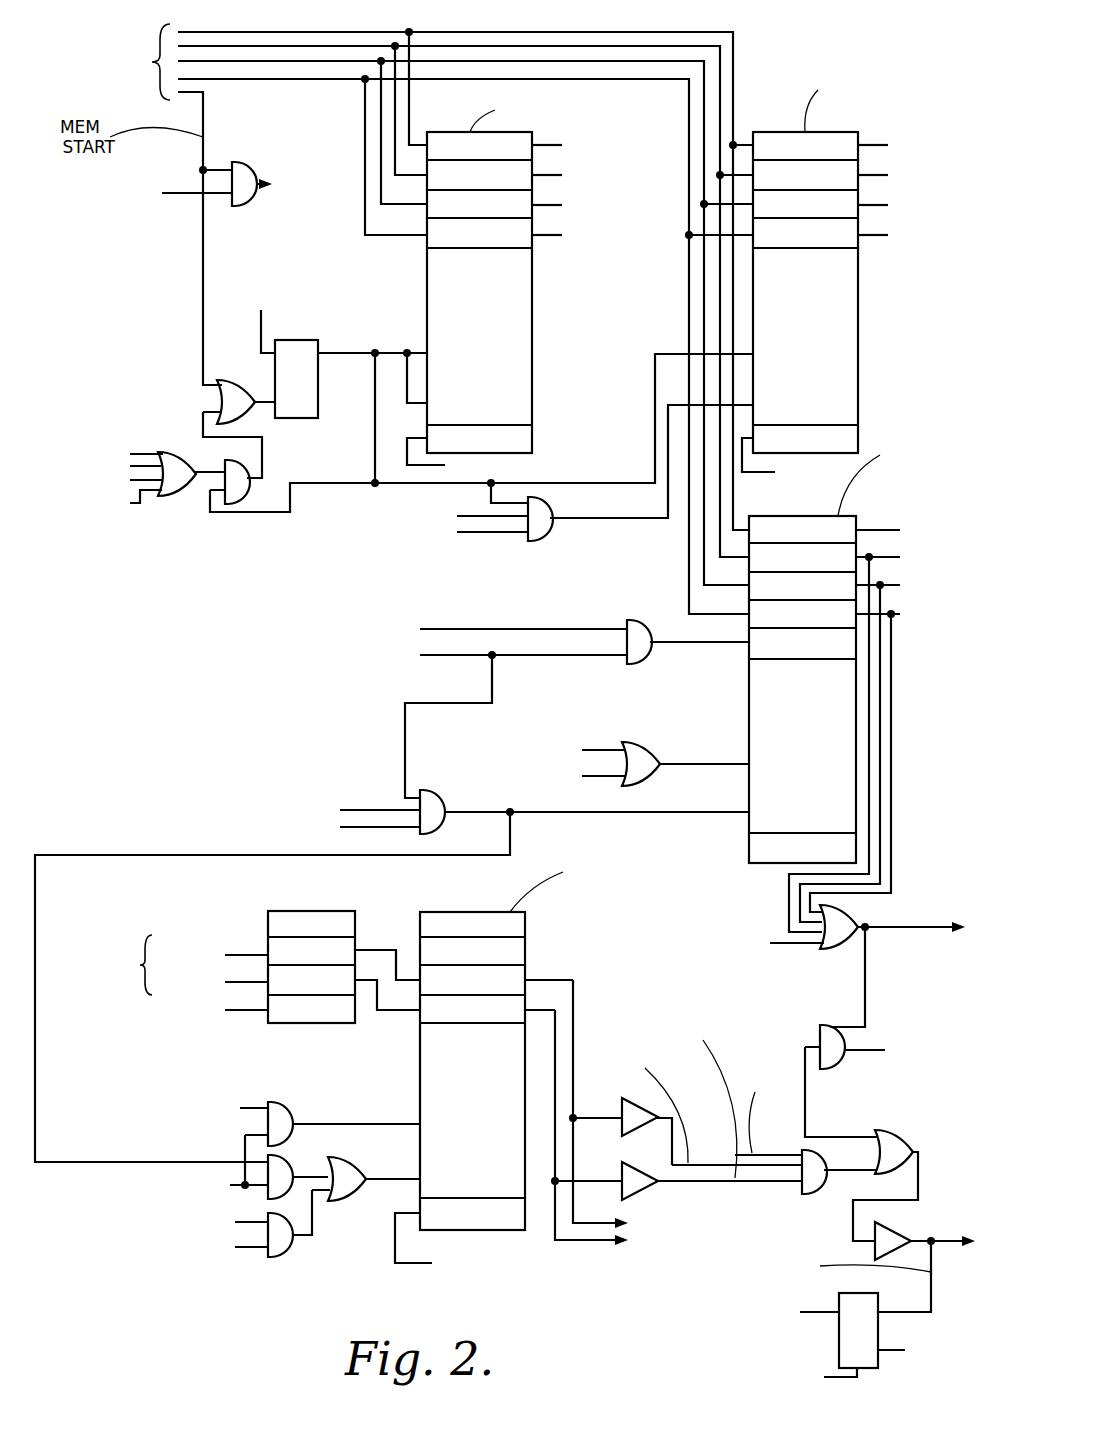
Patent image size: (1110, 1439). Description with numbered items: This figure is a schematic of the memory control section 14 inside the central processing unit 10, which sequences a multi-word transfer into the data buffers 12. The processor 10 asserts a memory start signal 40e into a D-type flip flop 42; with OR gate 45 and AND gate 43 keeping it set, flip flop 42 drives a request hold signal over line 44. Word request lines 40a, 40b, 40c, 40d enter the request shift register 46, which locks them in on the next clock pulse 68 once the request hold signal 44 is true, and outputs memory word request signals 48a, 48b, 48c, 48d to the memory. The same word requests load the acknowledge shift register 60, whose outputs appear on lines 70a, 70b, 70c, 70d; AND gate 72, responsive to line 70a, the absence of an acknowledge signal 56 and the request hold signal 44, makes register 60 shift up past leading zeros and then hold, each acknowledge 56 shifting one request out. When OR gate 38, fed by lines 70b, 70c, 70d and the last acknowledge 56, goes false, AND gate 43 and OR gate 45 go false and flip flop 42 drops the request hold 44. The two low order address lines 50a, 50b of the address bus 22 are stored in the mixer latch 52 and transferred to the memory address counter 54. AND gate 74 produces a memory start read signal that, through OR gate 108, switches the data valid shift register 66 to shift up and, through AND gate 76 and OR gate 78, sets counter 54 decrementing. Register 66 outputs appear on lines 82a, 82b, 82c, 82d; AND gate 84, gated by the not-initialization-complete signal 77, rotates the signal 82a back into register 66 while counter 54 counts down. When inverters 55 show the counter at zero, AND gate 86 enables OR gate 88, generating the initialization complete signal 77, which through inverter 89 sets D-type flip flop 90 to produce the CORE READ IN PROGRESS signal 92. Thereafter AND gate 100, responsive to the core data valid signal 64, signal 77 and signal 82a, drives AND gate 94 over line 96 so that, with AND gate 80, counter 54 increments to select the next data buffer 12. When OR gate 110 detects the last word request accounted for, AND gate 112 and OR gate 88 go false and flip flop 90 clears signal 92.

The central processing unit 10 is at (108, 58).
The data buffer 12 is at (679, 1235).
The memory control section 14 is at (213, 631).
The address bus 22 is at (103, 966).
The OR gate 38 is at (176, 498).
The word request line 40a is at (430, 32).
The word request line 40b is at (482, 46).
The word request line 40c is at (533, 61).
The word request line 40d is at (555, 79).
The memory start signal 40e is at (205, 108).
The D-type flip flop 42 is at (318, 387).
The AND gate 43 is at (248, 490).
The request hold signal line 44 is at (389, 352).
The OR gate 45 is at (227, 380).
The request shift register 46 is at (532, 355).
The memory word request signal 48a is at (548, 147).
The memory word request signal 48b is at (555, 173).
The memory word request signal 48c is at (557, 208).
The memory word request signal 48d is at (548, 238).
The low order address line 50a is at (232, 955).
The low order address line 50b is at (255, 982).
The mixer latch circuit 52 is at (302, 911).
The memory address counter 54 is at (471, 912).
The inverter 55 is at (617, 1107).
The acknowledge signal 56 is at (137, 505).
The acknowledge shift register 60 is at (858, 347).
The core data valid signal 64 is at (780, 947).
The data valid shift register 66 is at (856, 712).
The clock pulse 68 is at (405, 1283).
The RQ 0A output line 70a is at (870, 146).
The RQ 1A output line 70b is at (880, 175).
The RQ 2A output line 70c is at (875, 207).
The RQ 3A output line 70d is at (868, 238).
The AND gate 72 is at (552, 508).
The AND gate 74 is at (244, 162).
The AND gate 76 is at (294, 1247).
The INIT COMP signal 77 is at (460, 628).
The OR gate 78 is at (358, 1160).
The AND gate 80 is at (284, 1104).
The RQ 0B signal line 82a is at (868, 529).
The RQ 1B signal line 82b is at (880, 557).
The RQ 2B signal line 82c is at (893, 618).
The RQ 3B signal line 82d is at (893, 616).
The AND gate 84 is at (652, 655).
The AND gate 86 is at (809, 1192).
The OR gate 88 is at (894, 1134).
The buffer 89 is at (886, 1232).
The D-type flip flop 90 is at (862, 1294).
The CORE READ IN PROGRESS signal 92 is at (866, 1055).
The AND gate 94 is at (288, 1158).
The load line 96 is at (388, 856).
The AND gate 100 is at (447, 820).
The OR gate 108 is at (653, 745).
The OR gate 110 is at (826, 950).
The AND gate 112 is at (832, 1026).